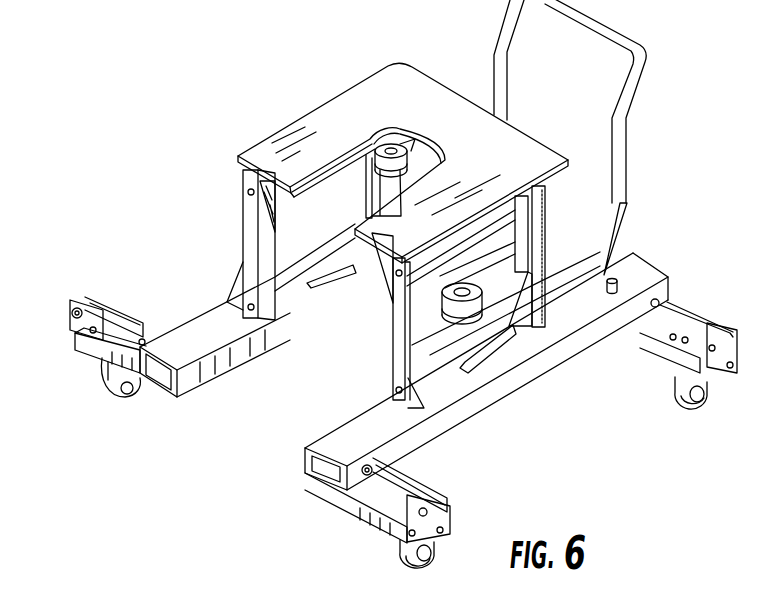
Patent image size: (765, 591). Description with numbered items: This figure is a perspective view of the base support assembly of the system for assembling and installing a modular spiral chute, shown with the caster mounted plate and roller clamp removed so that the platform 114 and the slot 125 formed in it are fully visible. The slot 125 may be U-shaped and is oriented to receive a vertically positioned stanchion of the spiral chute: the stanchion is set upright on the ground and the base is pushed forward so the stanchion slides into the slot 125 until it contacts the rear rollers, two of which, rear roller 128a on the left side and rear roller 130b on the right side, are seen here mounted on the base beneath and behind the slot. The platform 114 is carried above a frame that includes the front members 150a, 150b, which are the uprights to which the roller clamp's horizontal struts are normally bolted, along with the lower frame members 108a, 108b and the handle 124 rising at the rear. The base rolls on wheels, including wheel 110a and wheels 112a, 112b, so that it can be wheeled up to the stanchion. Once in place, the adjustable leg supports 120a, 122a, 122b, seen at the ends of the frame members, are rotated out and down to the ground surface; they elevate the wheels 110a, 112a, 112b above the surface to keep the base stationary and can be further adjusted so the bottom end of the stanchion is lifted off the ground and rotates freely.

The base frame member 108a is at (527, 362).
The base frame member 108b is at (208, 318).
The wheel 110a is at (700, 407).
The wheel 112a is at (398, 562).
The wheel 112b is at (110, 397).
The platform 114 is at (365, 117).
The adjustable leg support 120a is at (697, 337).
The adjustable leg support 122a is at (422, 495).
The adjustable leg support 122b is at (85, 302).
The handle 124 is at (593, 22).
The slot 125 is at (330, 162).
The rear roller 128a is at (398, 157).
The rear roller 130b is at (447, 307).
The front member 150a is at (400, 350).
The front member 150b is at (243, 205).